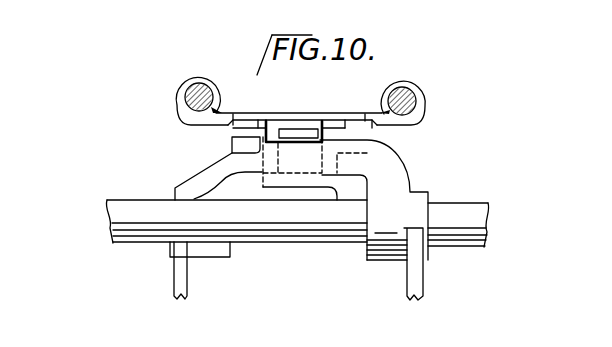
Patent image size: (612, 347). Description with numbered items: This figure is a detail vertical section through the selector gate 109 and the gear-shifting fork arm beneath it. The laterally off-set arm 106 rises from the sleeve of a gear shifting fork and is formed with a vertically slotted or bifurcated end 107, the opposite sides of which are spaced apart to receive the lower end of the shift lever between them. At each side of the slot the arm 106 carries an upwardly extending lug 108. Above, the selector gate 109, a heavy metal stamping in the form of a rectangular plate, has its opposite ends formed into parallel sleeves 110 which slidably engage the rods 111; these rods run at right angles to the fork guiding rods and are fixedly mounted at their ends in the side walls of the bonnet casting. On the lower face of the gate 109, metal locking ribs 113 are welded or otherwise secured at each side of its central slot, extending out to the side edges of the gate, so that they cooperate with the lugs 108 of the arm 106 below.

The laterally off-set arm 106 is at (196, 176).
The vertically slotted or bifurcated end 107 is at (267, 165).
The upwardly extending lug 108 is at (264, 126).
The selector gate 109 is at (330, 121).
The parallel sleeves 110 is at (183, 82).
The rods 111 is at (184, 98).
The metal locking ribs 113 is at (292, 130).